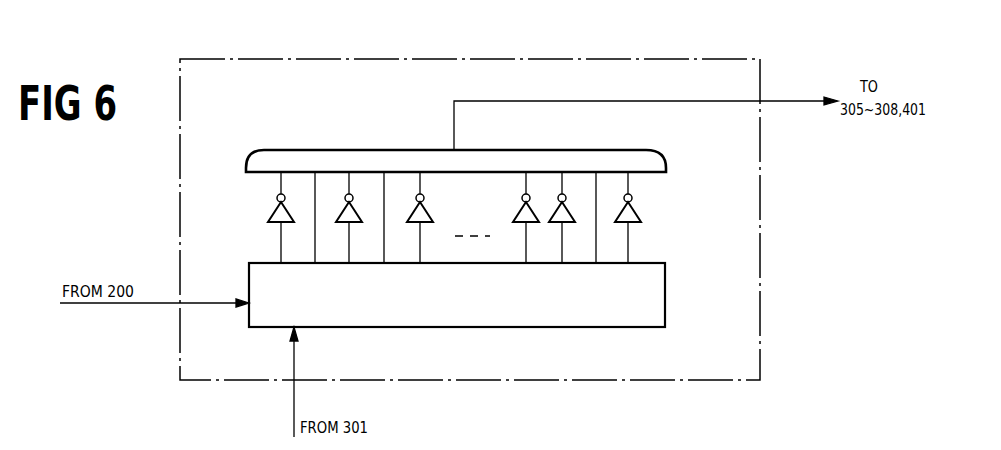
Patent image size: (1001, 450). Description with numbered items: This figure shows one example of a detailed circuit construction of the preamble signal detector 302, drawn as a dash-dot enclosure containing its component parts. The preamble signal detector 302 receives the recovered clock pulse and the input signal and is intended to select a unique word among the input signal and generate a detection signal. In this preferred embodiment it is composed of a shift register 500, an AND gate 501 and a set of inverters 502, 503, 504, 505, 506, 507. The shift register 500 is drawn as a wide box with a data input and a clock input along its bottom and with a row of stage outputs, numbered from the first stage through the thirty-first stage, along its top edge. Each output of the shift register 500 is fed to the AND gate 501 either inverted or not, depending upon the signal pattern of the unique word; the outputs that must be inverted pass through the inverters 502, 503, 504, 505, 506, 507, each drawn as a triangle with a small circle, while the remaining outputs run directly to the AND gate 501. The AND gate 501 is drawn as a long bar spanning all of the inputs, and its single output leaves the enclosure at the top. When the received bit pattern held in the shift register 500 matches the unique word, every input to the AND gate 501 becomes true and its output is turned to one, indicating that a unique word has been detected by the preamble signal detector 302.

The preamble signal detector 302 is at (238, 56).
The shift register 500 is at (628, 328).
The AND gate 501 is at (661, 151).
The inverter 502 is at (290, 213).
The inverter 503 is at (358, 213).
The inverter 504 is at (429, 213).
The inverter 505 is at (535, 213).
The inverter 506 is at (571, 213).
The inverter 507 is at (637, 213).